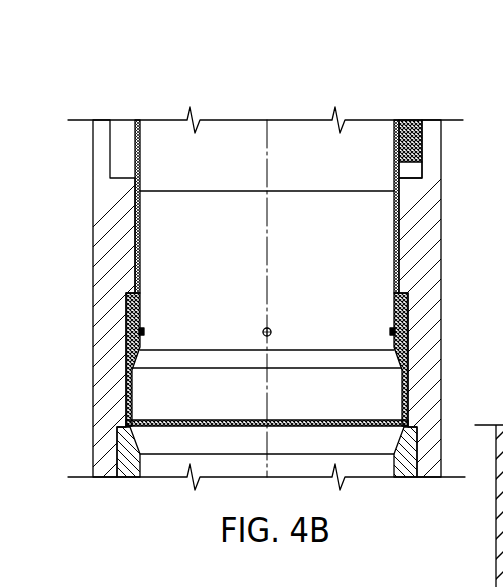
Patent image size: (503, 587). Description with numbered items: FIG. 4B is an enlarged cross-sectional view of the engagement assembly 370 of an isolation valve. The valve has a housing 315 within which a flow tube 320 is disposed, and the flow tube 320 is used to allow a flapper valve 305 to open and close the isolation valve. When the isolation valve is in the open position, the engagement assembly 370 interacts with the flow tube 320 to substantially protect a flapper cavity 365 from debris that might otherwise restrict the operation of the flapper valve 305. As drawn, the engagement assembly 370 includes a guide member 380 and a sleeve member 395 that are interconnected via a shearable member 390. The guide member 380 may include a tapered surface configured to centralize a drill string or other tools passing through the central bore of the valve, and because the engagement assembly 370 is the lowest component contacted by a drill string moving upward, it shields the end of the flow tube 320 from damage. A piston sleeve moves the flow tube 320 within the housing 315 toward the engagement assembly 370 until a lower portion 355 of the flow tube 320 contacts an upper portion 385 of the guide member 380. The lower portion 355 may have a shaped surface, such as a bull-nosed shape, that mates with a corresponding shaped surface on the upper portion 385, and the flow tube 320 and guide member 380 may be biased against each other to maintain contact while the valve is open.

The flapper valve 305 is at (410, 121).
The housing 315 is at (433, 132).
The flow tube 320 is at (136, 148).
The lower portion of the flow tube 355 is at (135, 190).
The flapper cavity 365 is at (412, 172).
The engagement assembly 370 is at (392, 342).
The guide member 380 is at (133, 265).
The upper portion of the guide member 385 is at (140, 191).
The shearable member 390 is at (128, 331).
The sleeve member 395 is at (128, 353).